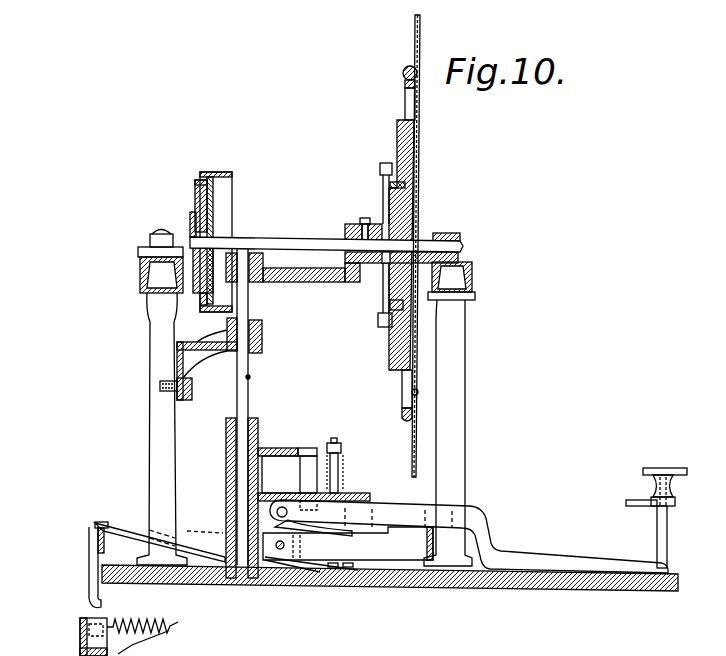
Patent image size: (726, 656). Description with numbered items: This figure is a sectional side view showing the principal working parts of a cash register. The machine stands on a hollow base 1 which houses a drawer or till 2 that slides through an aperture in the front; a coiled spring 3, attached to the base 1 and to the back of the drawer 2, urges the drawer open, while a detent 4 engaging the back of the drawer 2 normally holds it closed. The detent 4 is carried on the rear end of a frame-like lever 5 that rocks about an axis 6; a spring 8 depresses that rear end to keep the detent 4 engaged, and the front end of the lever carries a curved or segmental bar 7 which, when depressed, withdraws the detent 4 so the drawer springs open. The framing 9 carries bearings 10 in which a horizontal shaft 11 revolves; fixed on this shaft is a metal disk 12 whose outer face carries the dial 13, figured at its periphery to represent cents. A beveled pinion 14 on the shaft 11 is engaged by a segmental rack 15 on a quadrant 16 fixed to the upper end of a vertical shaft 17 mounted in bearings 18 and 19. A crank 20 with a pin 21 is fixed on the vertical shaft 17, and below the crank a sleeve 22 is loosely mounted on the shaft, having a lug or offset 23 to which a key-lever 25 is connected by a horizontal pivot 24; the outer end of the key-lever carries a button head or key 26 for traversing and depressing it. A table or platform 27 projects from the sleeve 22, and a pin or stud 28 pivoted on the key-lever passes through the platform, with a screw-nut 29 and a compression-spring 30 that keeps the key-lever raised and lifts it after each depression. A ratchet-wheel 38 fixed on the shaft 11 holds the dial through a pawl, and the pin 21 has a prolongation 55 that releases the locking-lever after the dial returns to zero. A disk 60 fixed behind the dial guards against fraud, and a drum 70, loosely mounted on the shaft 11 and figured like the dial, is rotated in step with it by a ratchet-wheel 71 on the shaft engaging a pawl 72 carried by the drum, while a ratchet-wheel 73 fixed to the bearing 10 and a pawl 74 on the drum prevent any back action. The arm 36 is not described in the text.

The base 1 is at (381, 578).
The drawer or till 2 is at (128, 648).
The coiled spring 3 is at (148, 622).
The detent 4 is at (89, 600).
The frame-like lever 5 is at (104, 542).
The axis 6 is at (283, 549).
The curved or segmental bar 7 is at (426, 540).
The spring 8 is at (122, 531).
The framing 9 is at (140, 268).
The bearings 10 is at (190, 222).
The horizontal shaft 11 is at (282, 240).
The metal disk 12 is at (404, 70).
The dial 13 is at (421, 40).
The beveled pinion 14 is at (352, 225).
The segmental rack 15 is at (356, 283).
The quadrant 16 is at (276, 283).
The vertical shaft 17 is at (252, 377).
The bearing 18 is at (263, 338).
The bearing 19 is at (254, 584).
The crank 20 is at (285, 448).
The pin 21 is at (300, 476).
The sleeve 22 is at (226, 482).
The lug or offset 23 is at (248, 508).
The horizontal pivot 24 is at (285, 516).
The key-lever 25 is at (480, 522).
The button head or key 26 is at (664, 470).
The table or platform 27 is at (365, 493).
The pin or stud 28 is at (337, 440).
The screw-nut 29 is at (342, 452).
The compression-spring 30 is at (344, 464).
The arm 36 is at (626, 503).
The ratchet-wheel 38 is at (385, 163).
The prolongation 55 is at (342, 531).
The disk 60 is at (397, 125).
The drum 70 is at (218, 172).
The ratchet-wheel 71 is at (213, 222).
The pawl 72 is at (213, 190).
The ratchet-wheel 73 is at (195, 205).
The pawl 74 is at (197, 183).